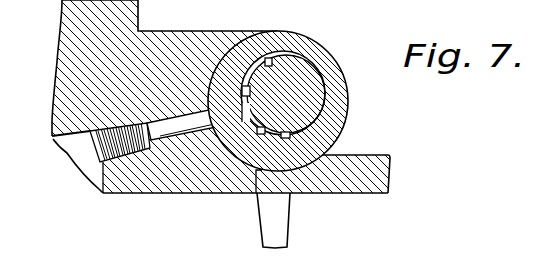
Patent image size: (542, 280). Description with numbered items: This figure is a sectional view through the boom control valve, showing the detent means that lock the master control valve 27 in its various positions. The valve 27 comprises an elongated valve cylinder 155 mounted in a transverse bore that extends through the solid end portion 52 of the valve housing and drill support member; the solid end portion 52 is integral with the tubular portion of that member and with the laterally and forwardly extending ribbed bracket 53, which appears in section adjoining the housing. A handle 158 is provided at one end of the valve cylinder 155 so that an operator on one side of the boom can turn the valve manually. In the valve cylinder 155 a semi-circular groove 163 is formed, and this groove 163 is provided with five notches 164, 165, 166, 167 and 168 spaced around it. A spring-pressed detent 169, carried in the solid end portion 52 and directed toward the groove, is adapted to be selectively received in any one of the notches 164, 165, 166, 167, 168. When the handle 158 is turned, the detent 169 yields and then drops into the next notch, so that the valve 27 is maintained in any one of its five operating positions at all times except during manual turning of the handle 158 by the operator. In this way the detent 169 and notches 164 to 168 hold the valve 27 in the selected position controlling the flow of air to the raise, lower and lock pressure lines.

The solid end portion 52 is at (72, 44).
The ribbed bracket 53 is at (390, 172).
The master control valve 27 is at (352, 116).
The valve cylinder 155 is at (297, 67).
The semi-circular groove 163 is at (264, 62).
The notch 164 is at (258, 54).
The notch 165 is at (247, 83).
The notch 166 is at (213, 115).
The notch 167 is at (260, 139).
The notch 168 is at (285, 139).
The spring-pressed detent 169 is at (161, 139).
The handle 158 is at (277, 231).